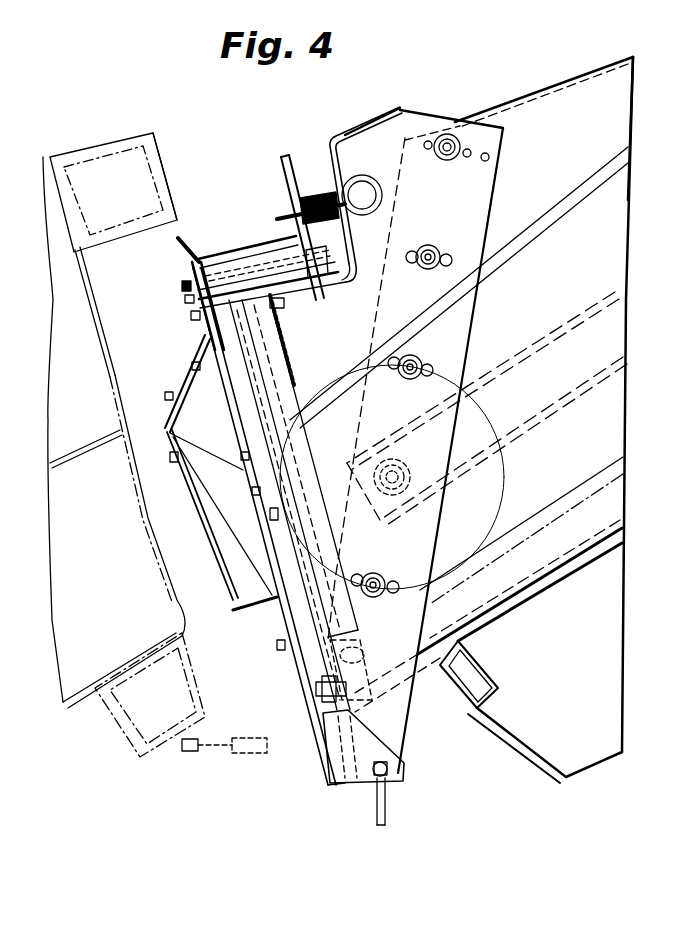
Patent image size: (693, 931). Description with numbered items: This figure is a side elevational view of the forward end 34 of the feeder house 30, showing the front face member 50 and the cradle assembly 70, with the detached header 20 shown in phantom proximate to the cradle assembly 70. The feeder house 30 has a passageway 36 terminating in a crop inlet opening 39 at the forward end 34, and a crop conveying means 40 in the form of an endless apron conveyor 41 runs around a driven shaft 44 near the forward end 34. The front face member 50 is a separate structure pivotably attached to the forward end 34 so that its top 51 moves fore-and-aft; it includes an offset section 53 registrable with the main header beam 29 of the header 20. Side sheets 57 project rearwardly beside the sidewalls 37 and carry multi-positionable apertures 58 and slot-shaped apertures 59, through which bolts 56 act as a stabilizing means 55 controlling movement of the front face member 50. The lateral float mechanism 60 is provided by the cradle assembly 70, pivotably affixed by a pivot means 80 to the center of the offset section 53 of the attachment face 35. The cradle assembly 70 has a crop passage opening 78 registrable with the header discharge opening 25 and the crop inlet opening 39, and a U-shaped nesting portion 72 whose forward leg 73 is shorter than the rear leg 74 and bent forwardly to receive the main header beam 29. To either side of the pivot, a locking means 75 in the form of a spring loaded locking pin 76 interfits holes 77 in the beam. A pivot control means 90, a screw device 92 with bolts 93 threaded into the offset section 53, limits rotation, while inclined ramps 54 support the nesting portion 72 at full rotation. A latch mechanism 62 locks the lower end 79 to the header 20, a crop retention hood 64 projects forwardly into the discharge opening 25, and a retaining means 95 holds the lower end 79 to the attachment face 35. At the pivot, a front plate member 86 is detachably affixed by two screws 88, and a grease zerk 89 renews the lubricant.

The header 20 is at (83, 698).
The header discharge opening 25 is at (110, 378).
The main header beam 29 is at (85, 148).
The feeder house 30 is at (625, 255).
The forward end 34 is at (507, 102).
The attachment face 35 is at (322, 664).
The passageway 36 is at (537, 588).
The sidewalls 37 is at (628, 135).
The crop inlet opening 39 is at (363, 652).
The crop conveying means 40 is at (531, 474).
The apron conveyor 41 is at (508, 270).
The driven shaft 44 is at (394, 462).
The front face member 50 is at (350, 128).
The top 51 is at (415, 112).
The offset section 53 is at (338, 278).
The inclined ramp 54 is at (348, 234).
The stabilizing means 55 is at (490, 297).
The bolts 56 is at (445, 160).
The side sheets 57 is at (491, 186).
The multi-positionable apertures 58 is at (490, 135).
The slot-shaped apertures 59 is at (436, 252).
The lateral float mechanism 60 is at (230, 163).
The latch mechanism 62 is at (165, 758).
The crop retention hood 64 is at (200, 392).
The cradle assembly 70 is at (327, 784).
The nesting portion 72 is at (268, 246).
The forward leg 73 is at (194, 258).
The rear leg 74 is at (284, 158).
The locking means 75 is at (308, 166).
The spring loaded locking pin 76 is at (372, 178).
The holes 77 is at (170, 204).
The crop passage opening 78 is at (222, 569).
The lower end 79 is at (350, 800).
The pivot means 80 is at (165, 272).
The front plate member 86 is at (183, 285).
The screws 88 is at (186, 300).
The grease zerk 89 is at (192, 318).
The pivot control means 90 is at (305, 375).
The screw device 92 is at (282, 306).
The bolts 93 is at (292, 345).
The retaining means 95 is at (304, 724).